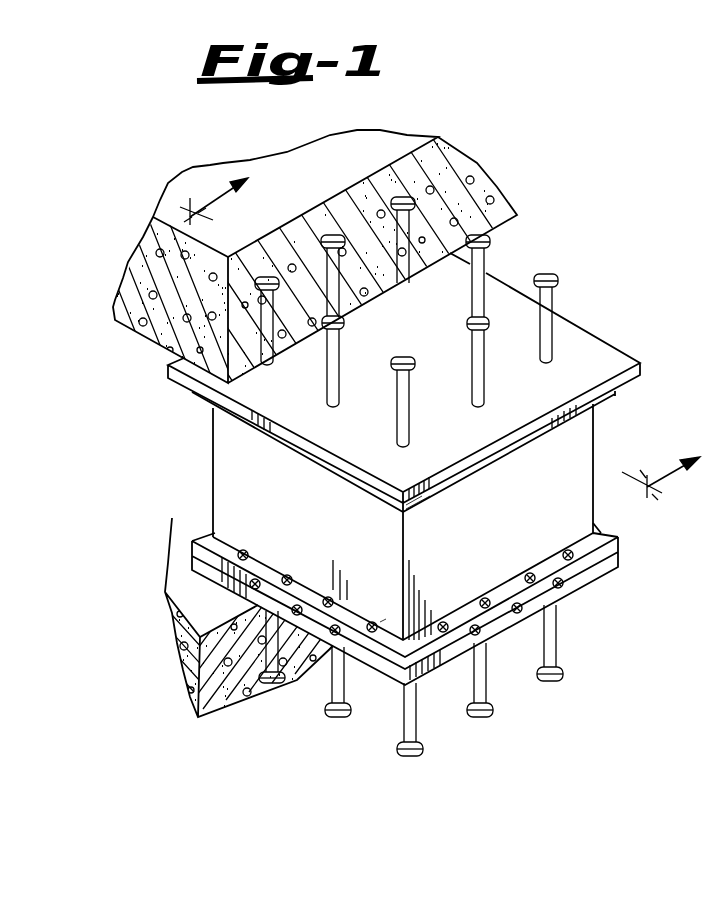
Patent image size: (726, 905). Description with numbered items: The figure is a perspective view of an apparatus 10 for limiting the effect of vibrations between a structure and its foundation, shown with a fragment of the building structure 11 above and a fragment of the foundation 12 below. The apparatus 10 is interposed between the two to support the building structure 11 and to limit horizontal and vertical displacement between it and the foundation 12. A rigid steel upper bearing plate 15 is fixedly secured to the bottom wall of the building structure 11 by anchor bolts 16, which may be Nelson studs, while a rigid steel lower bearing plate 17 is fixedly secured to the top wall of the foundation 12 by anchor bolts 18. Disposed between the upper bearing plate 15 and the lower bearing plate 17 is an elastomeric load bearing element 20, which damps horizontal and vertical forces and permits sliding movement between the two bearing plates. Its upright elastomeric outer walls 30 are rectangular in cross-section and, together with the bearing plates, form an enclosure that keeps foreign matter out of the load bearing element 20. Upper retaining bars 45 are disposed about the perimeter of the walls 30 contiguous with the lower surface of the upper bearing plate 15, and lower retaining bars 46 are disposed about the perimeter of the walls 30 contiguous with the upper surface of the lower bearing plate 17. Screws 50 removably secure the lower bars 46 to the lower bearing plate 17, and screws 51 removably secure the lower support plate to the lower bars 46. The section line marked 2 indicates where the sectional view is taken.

The section line 2- 2 is at (440, 339).
The apparatus 10 is at (550, 237).
The building structure 11 is at (472, 163).
The foundation 12 is at (218, 708).
The upper bearing plate 15 is at (595, 343).
The anchor bolts 16 is at (473, 288).
The lower bearing plate 17 is at (603, 570).
The anchor bolts 18 is at (280, 655).
The elastomeric load bearing element 20 is at (603, 424).
The outer walls 30 is at (305, 497).
The upper retaining bars 45 is at (362, 492).
The lower retaining bars 46 is at (598, 527).
The screws 50 is at (485, 602).
The screws 51 is at (257, 573).